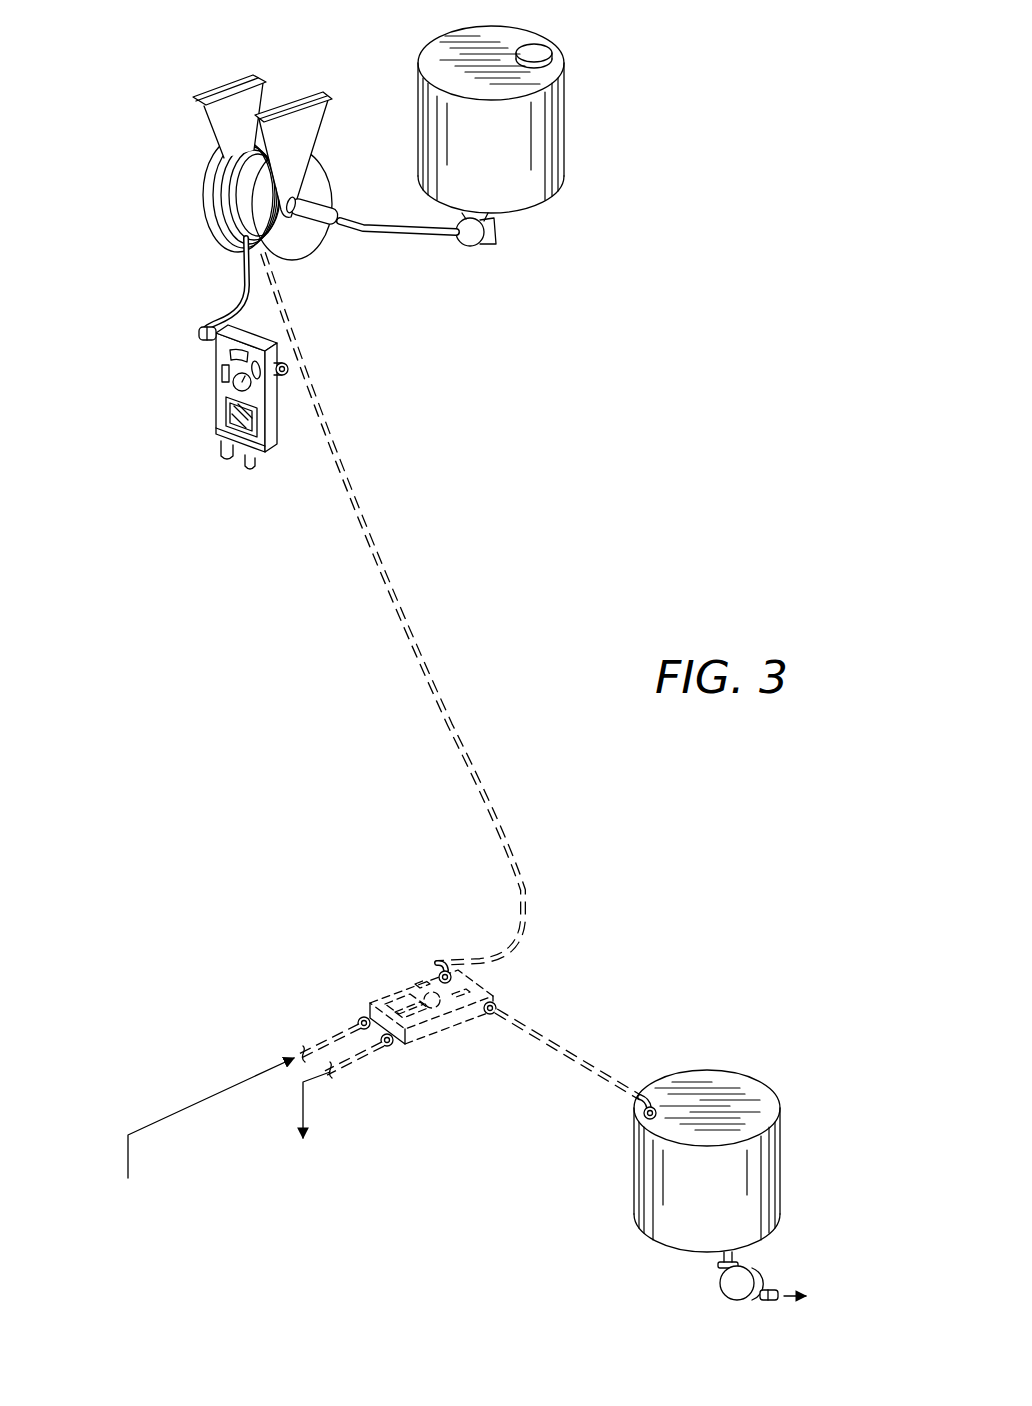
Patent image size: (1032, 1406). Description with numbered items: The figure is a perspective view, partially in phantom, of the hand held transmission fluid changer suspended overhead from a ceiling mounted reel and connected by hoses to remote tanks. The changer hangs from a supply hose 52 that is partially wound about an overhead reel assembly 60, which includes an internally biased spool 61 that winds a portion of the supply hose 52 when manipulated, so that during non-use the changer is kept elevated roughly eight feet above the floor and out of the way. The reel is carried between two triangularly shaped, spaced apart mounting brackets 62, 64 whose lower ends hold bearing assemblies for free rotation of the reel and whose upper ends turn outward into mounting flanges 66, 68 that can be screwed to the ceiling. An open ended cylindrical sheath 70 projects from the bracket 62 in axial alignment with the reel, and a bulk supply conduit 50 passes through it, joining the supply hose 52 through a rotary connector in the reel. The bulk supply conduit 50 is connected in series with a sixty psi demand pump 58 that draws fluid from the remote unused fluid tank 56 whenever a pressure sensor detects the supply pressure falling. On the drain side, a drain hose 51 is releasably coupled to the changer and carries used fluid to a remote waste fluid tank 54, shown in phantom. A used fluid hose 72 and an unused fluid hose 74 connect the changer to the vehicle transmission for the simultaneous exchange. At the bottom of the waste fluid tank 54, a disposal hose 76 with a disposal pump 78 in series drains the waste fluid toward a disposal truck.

The bulk supply conduit 50 is at (402, 220).
The drain hose 51 is at (568, 1056).
The supply hose 52 is at (204, 311).
The waste fluid tank 54 is at (758, 1095).
The unused fluid tank 56 is at (540, 47).
The demand pump 58 is at (488, 237).
The overhead reel assembly 60 is at (245, 149).
The spool 61 is at (213, 176).
The mounting bracket 62 is at (308, 137).
The mounting bracket 64 is at (212, 98).
The mounting flange 66 is at (305, 102).
The mounting flange 68 is at (240, 86).
The cylindrical sheath 70 is at (322, 202).
The used fluid hose 72 is at (333, 1042).
The unused fluid hose 74 is at (357, 1063).
The disposal hose 76 is at (760, 1302).
The disposal pump 78 is at (808, 1292).